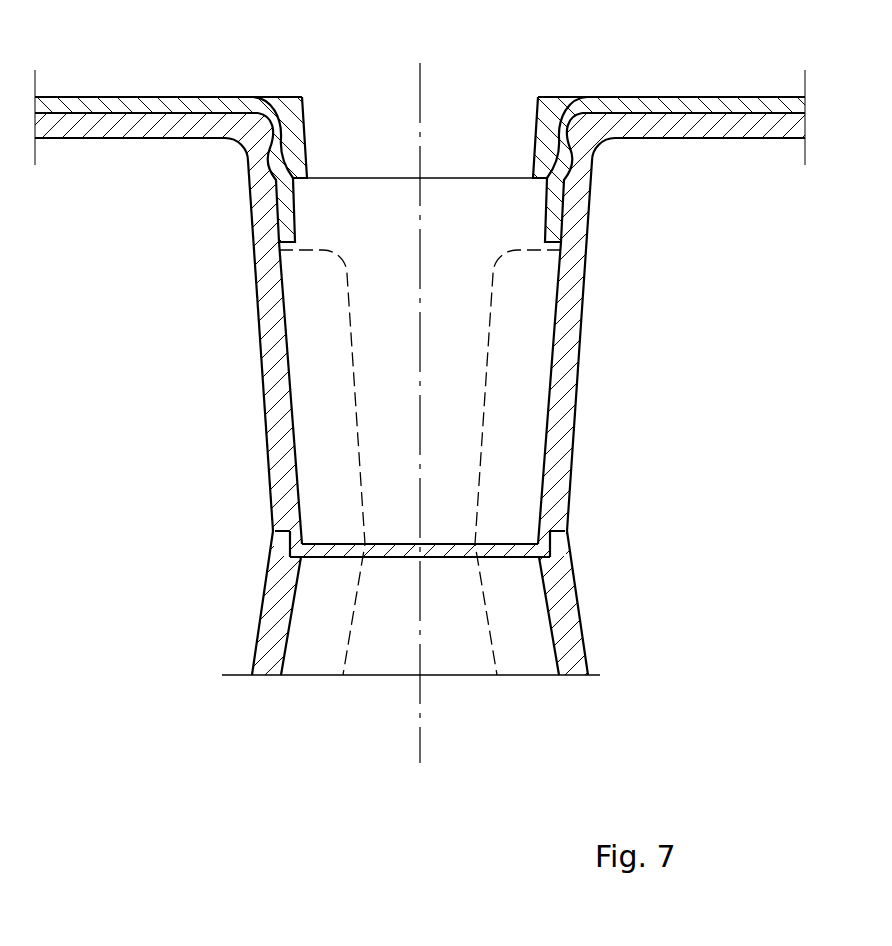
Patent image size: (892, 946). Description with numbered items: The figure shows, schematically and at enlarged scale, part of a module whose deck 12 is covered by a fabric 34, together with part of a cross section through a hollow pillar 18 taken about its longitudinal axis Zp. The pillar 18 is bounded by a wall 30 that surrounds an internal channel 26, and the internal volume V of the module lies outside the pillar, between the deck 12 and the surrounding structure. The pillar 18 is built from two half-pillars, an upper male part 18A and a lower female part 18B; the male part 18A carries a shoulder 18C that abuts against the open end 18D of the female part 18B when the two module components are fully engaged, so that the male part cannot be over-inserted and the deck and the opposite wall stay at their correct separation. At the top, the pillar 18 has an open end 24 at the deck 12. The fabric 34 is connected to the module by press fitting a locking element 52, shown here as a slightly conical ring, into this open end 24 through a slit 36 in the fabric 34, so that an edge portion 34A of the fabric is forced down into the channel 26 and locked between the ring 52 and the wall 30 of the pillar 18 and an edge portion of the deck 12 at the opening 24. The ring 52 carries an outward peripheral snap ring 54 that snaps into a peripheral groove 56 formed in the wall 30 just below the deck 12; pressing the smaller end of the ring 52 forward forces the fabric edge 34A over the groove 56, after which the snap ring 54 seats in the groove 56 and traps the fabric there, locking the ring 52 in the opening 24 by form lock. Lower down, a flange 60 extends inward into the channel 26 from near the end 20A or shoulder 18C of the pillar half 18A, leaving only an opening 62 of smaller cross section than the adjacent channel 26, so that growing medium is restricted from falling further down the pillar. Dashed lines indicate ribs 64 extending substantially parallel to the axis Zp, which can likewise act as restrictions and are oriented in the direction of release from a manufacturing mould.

The deck 12 is at (766, 125).
The pillar 18 is at (573, 531).
The male part 18A is at (557, 439).
The female part 18B is at (563, 625).
The shoulder 18C is at (557, 518).
The open end 18D is at (557, 543).
The end of the pillar half 20A is at (265, 531).
The open end 24 is at (457, 143).
The channel 26 is at (479, 390).
The wall 30 is at (278, 439).
The fabric 34 is at (766, 103).
The edge portion 34A is at (283, 216).
The slit 36 is at (505, 90).
The locking element 52 is at (332, 127).
The snap ring 54 is at (565, 157).
The groove 56 is at (573, 157).
The flange 60 is at (333, 550).
The opening 62 is at (391, 550).
The ribs 64 is at (312, 323).
The internal volume V is at (187, 388).
The longitudinal axis Zp is at (420, 752).